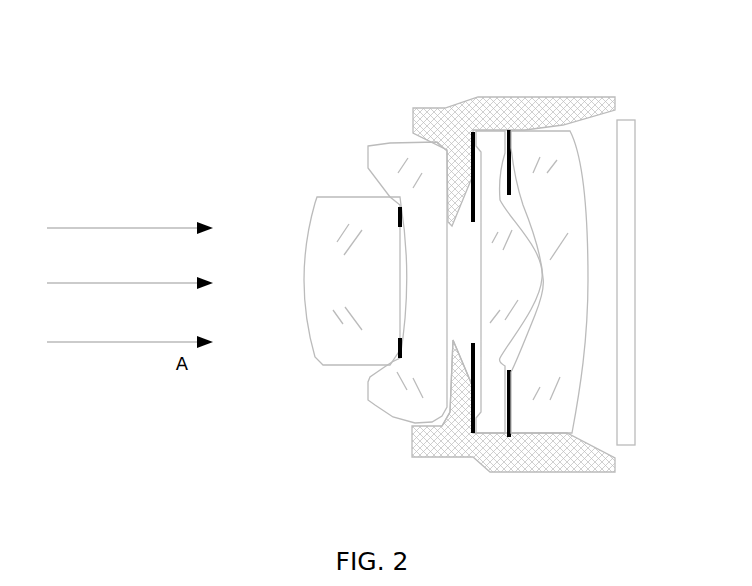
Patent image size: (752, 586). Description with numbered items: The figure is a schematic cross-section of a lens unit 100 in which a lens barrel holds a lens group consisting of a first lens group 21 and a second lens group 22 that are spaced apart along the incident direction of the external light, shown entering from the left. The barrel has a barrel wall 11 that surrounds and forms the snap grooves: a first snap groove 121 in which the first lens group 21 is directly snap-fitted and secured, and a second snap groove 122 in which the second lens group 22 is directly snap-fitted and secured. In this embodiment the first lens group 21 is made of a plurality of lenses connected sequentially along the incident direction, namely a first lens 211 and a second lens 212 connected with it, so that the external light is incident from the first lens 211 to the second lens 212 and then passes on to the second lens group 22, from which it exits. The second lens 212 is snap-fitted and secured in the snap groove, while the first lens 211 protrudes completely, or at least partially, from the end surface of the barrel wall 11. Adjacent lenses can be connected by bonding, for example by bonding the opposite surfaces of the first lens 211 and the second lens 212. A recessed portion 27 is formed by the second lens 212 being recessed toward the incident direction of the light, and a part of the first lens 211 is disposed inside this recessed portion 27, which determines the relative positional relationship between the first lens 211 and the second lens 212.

The lens unit 100 is at (250, 433).
The barrel wall 11 is at (520, 460).
The first snap groove 121 is at (430, 361).
The second snap groove 122 is at (524, 132).
The first lens group 21 is at (303, 73).
The first lens 211 is at (362, 217).
The second lens 212 is at (410, 165).
The recessed portion 27 is at (392, 287).
The second lens group 22 is at (545, 278).